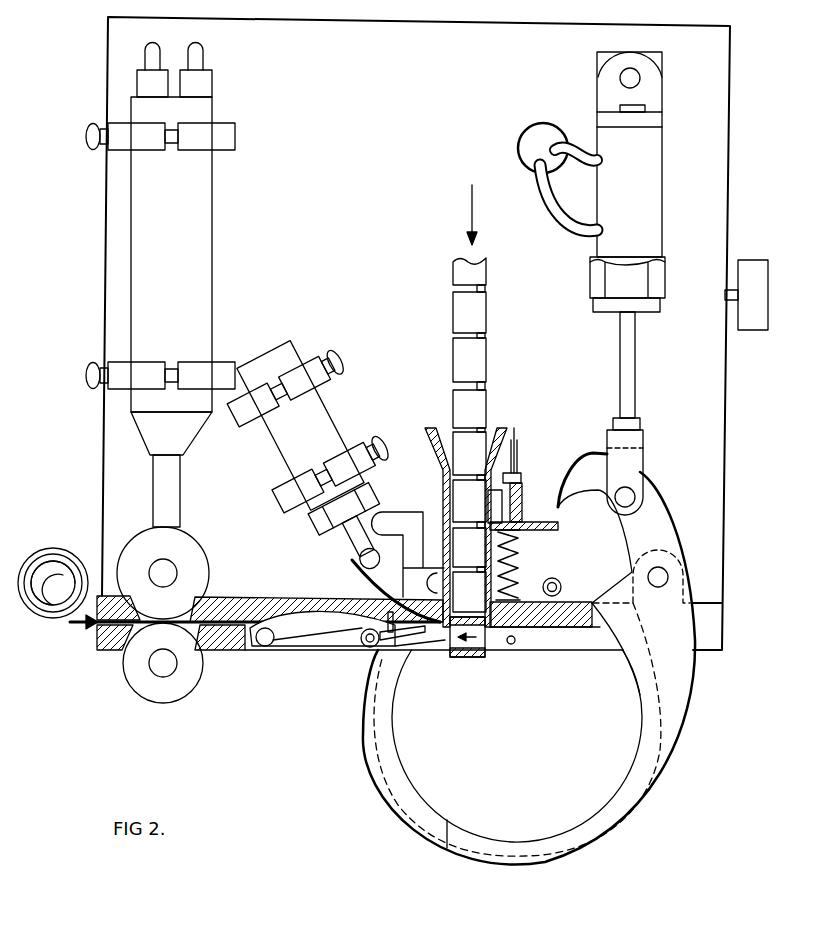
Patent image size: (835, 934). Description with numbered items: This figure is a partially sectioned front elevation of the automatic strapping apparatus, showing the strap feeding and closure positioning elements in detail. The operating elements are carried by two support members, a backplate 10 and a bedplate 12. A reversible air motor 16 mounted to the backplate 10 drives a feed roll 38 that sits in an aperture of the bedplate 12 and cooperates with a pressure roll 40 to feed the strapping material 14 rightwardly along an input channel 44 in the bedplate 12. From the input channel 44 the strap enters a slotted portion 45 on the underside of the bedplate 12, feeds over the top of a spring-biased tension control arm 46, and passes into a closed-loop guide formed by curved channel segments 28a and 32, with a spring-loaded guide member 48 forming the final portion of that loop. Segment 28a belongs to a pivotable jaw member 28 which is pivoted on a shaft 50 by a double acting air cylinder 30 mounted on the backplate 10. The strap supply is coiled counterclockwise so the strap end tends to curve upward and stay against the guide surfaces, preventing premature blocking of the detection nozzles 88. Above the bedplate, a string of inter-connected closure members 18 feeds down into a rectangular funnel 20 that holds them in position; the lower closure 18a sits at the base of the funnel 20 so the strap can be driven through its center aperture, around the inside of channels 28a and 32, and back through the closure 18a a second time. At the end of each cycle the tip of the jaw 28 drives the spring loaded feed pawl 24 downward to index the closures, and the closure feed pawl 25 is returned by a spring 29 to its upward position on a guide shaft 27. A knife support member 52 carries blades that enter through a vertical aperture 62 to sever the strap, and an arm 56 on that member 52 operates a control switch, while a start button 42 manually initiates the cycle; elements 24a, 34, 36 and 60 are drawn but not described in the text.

The backplate 10 is at (728, 95).
The bedplate 12 is at (242, 600).
The strapping material 14 is at (55, 620).
The reversible air motor 16 is at (212, 240).
The string of inter-connected closure members 18 is at (494, 368).
The lower closure 18a is at (456, 656).
The rectangular funnel 20 is at (497, 436).
The spring loaded feed pawl 24 is at (524, 500).
The plunger flange 24a is at (542, 531).
The closure feed pawl 25 is at (488, 505).
The guide shaft 27 is at (518, 472).
The pivotable jaw member 28 is at (652, 522).
The channel member segment 28a is at (625, 808).
The spring 29 is at (520, 590).
The double acting air cylinder 30 is at (655, 190).
The channel member 32 is at (392, 800).
The auxiliary cylinder 34 is at (322, 440).
The guide 36 is at (420, 600).
The feed roll 38 is at (190, 566).
The pressure roll 40 is at (170, 690).
The start button 42 is at (745, 262).
The input channel 44 is at (108, 630).
The slotted portion 45 is at (250, 645).
The tension control arm 46 is at (308, 625).
The guide member 48 is at (400, 642).
The shaft 50 is at (660, 588).
The inverted U-shaped support member 52 is at (423, 640).
The arm 56 is at (411, 520).
The roller 60 is at (562, 588).
The vertical aperture 62 is at (366, 646).
The detection nozzles 88 is at (512, 645).